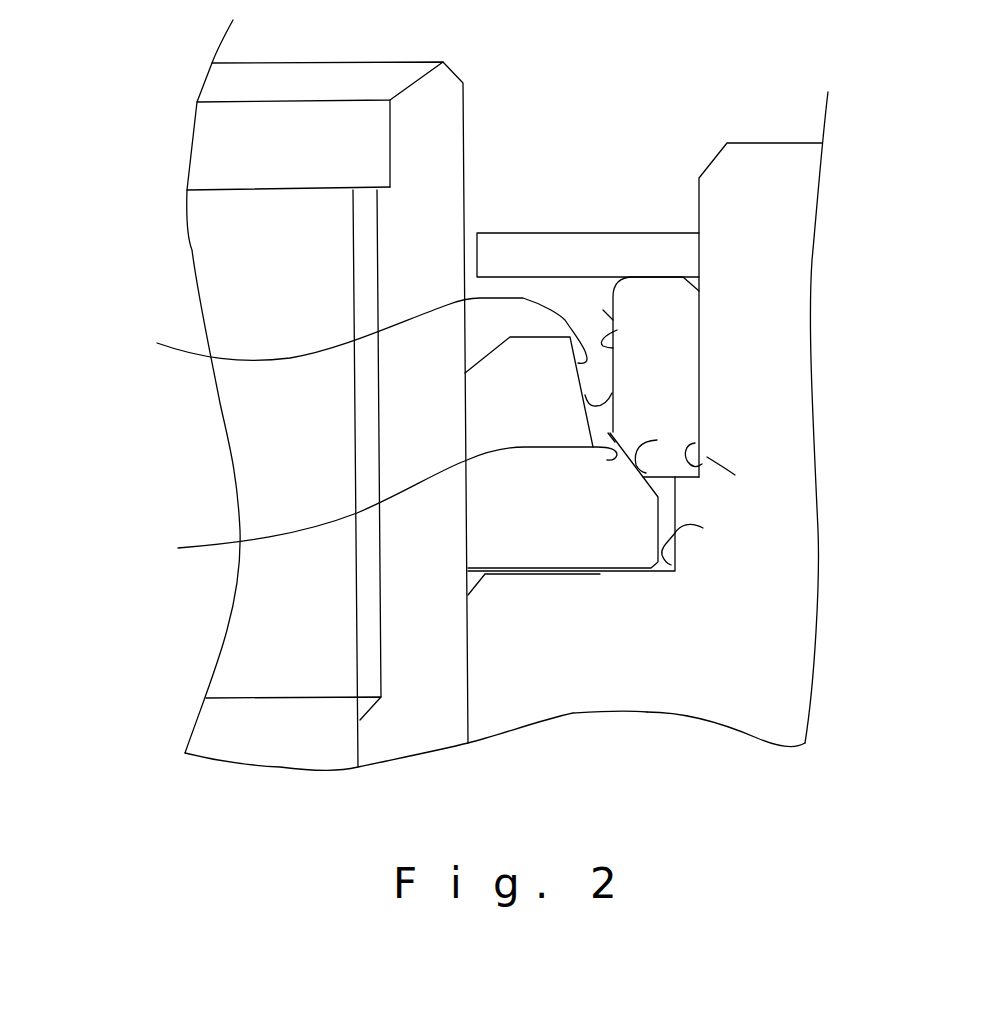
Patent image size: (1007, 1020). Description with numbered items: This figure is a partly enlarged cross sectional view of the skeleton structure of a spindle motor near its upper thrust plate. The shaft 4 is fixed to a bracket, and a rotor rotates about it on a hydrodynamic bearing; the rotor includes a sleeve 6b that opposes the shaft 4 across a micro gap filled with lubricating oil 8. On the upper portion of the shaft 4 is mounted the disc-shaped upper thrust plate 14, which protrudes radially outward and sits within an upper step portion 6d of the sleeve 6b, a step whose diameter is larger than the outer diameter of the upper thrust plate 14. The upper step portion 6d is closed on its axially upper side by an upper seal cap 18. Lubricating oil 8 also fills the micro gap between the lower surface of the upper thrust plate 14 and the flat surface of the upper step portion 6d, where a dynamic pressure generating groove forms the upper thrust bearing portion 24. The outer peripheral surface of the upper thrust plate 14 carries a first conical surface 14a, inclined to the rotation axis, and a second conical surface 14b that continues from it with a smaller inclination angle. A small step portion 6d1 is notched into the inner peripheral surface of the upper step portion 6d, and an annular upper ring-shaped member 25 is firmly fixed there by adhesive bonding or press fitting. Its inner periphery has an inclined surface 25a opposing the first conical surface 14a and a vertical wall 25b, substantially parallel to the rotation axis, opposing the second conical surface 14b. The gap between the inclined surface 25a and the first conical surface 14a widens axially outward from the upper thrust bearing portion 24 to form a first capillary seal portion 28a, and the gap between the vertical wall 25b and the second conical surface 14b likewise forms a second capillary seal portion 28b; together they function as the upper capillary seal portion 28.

The shaft 4 is at (255, 285).
The sleeve 6b is at (770, 210).
The upper step portion 6d is at (703, 528).
The small step portion 6d1 is at (707, 457).
The lubricating oil 8 is at (608, 433).
The upper thrust plate 14 is at (365, 503).
The first conical surface 14a is at (530, 497).
The second conical surface 14b is at (332, 372).
The upper seal cap 18 is at (573, 238).
The upper thrust bearing portion 24 is at (593, 572).
The upper ring-shaped member 25 is at (672, 358).
The inclined surface 25a is at (695, 443).
The vertical wall 25b is at (617, 330).
The upper capillary seal portion 28 is at (603, 310).
The first capillary seal portion 28a is at (620, 440).
The second capillary seal portion 28b is at (603, 392).